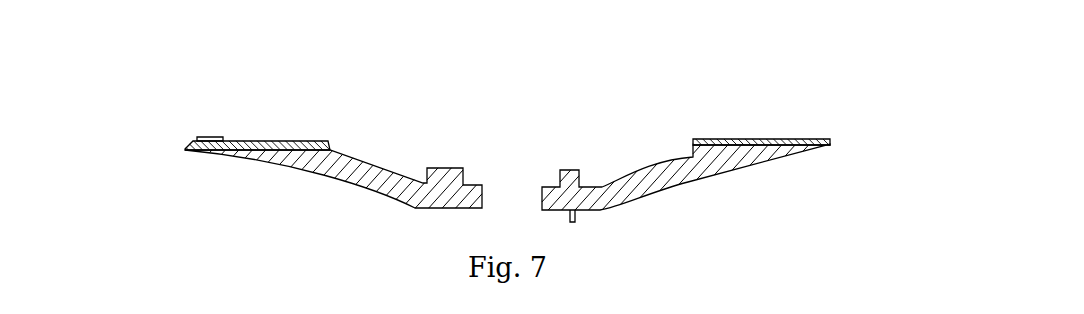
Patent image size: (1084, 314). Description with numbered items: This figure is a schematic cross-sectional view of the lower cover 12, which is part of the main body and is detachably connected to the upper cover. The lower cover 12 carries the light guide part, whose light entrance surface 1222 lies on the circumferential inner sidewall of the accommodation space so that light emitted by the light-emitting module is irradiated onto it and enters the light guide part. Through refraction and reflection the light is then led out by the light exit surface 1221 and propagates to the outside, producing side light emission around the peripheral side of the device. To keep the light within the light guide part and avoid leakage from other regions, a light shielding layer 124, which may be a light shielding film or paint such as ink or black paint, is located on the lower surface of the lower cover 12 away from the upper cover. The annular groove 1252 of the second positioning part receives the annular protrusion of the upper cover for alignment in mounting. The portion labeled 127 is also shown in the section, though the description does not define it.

The lower cover 12 is at (720, 118).
The light shielding layer 124 is at (744, 212).
The connecting portion 127 is at (330, 147).
The light exit surface 1221 is at (453, 80).
The light entrance surface 1222 is at (185, 147).
The annular groove 1252 is at (828, 142).